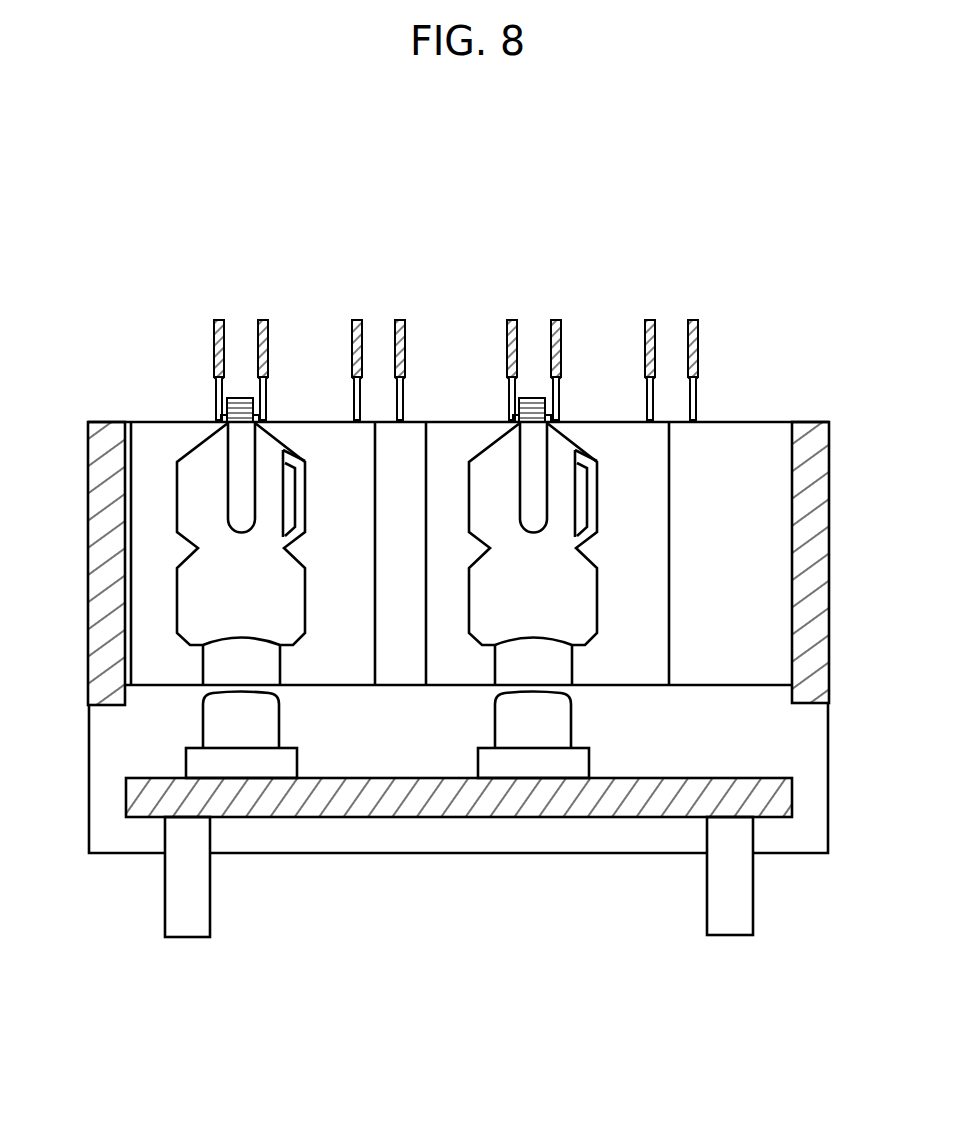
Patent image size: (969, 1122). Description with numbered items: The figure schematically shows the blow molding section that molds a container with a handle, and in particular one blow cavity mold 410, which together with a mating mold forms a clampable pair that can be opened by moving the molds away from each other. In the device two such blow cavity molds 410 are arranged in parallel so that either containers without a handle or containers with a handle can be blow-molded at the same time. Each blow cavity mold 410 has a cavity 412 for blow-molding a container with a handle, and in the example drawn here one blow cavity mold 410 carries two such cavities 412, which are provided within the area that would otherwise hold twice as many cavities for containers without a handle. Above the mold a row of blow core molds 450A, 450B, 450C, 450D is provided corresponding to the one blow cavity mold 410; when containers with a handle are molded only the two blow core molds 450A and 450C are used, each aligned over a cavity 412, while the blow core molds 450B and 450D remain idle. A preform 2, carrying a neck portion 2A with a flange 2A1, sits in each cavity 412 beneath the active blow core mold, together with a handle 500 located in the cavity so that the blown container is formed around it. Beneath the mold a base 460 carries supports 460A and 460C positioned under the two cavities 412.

The preform 2 is at (223, 462).
The connector nut 2A is at (242, 397).
The nut flange 2A1 is at (220, 418).
The blow cavity mold 410 is at (748, 421).
The cavity 412 is at (178, 582).
The blow core mold 450A is at (214, 328).
The blow core mold 450B is at (352, 328).
The blow core mold 450C is at (508, 328).
The blow core mold 450D is at (646, 328).
The base plate 460 is at (792, 792).
The support post 460A is at (274, 727).
The support post 460C is at (566, 727).
The locking member 500 is at (305, 463).